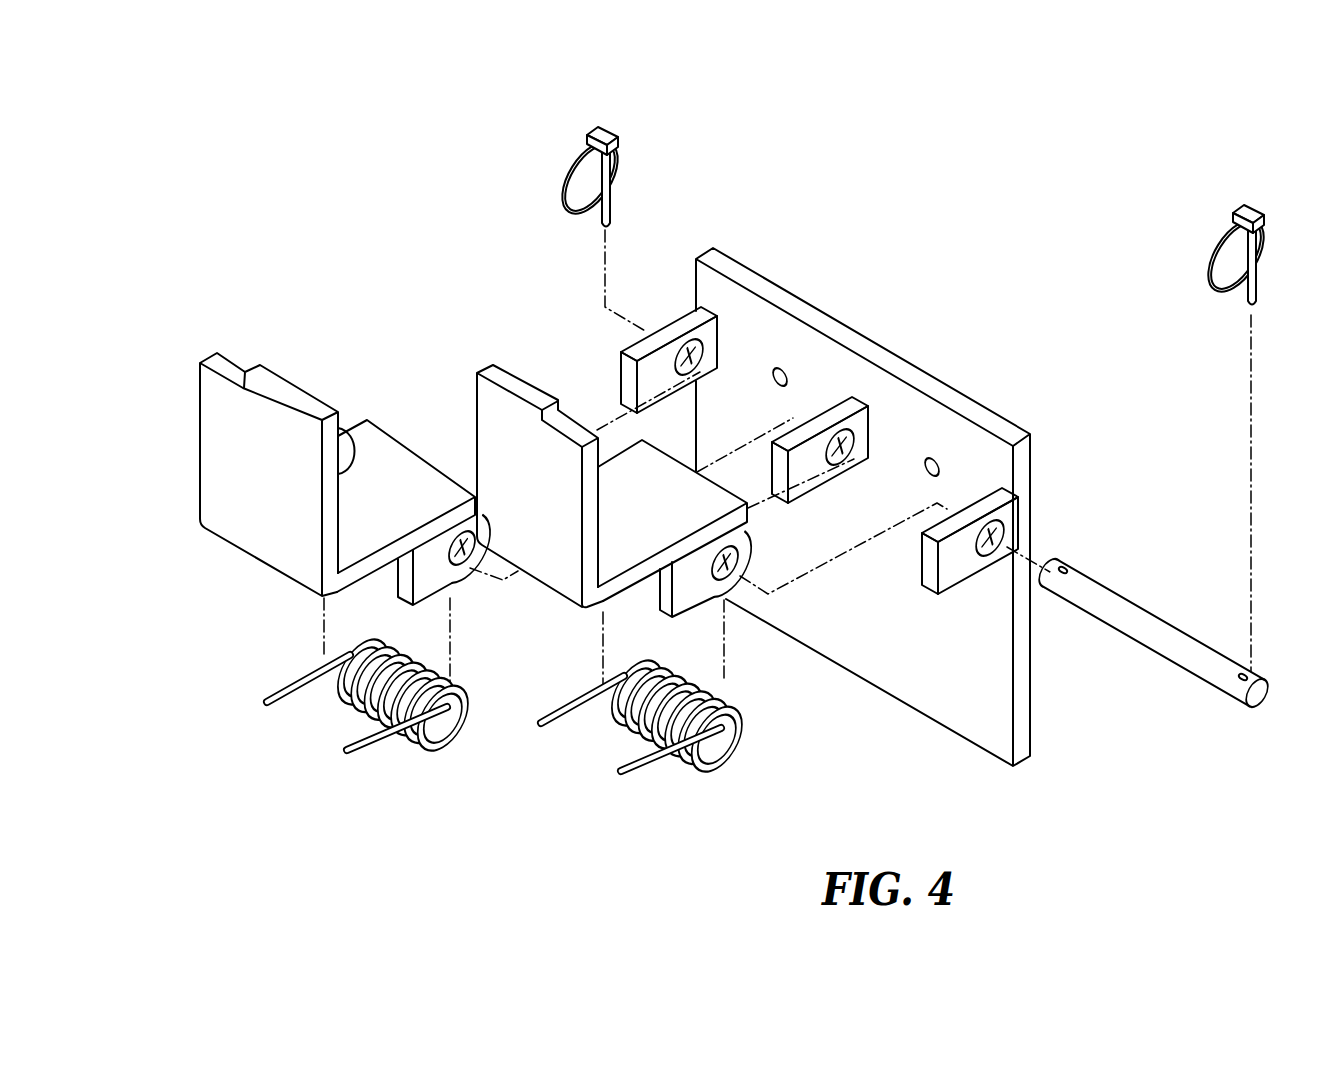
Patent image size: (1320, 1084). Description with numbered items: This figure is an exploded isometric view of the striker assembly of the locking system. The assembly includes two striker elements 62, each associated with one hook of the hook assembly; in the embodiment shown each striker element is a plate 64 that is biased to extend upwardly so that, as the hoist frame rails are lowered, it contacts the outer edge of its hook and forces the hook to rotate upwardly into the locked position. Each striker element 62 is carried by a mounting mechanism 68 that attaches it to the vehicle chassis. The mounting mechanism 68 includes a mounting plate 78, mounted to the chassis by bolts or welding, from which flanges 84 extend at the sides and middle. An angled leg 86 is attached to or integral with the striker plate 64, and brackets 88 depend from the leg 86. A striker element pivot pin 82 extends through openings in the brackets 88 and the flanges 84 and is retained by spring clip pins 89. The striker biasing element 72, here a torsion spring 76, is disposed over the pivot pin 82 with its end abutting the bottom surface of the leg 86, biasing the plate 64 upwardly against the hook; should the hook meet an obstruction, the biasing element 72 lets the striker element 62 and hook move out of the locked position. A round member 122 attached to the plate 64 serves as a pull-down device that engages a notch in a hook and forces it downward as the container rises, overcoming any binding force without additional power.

The striker element 62 is at (467, 506).
The plate 64 is at (208, 395).
The round member 122 is at (360, 432).
The angled leg 86 is at (385, 510).
The brackets 88 is at (686, 596).
The spring clip pins 89 is at (609, 131).
The flanges 84 is at (830, 412).
The striker element pivot pin 82 is at (1118, 612).
The mounting plate 78 is at (972, 706).
The mounting mechanism 68 is at (944, 490).
The torsion spring 76 is at (340, 703).
The striker biasing element 72 is at (496, 750).